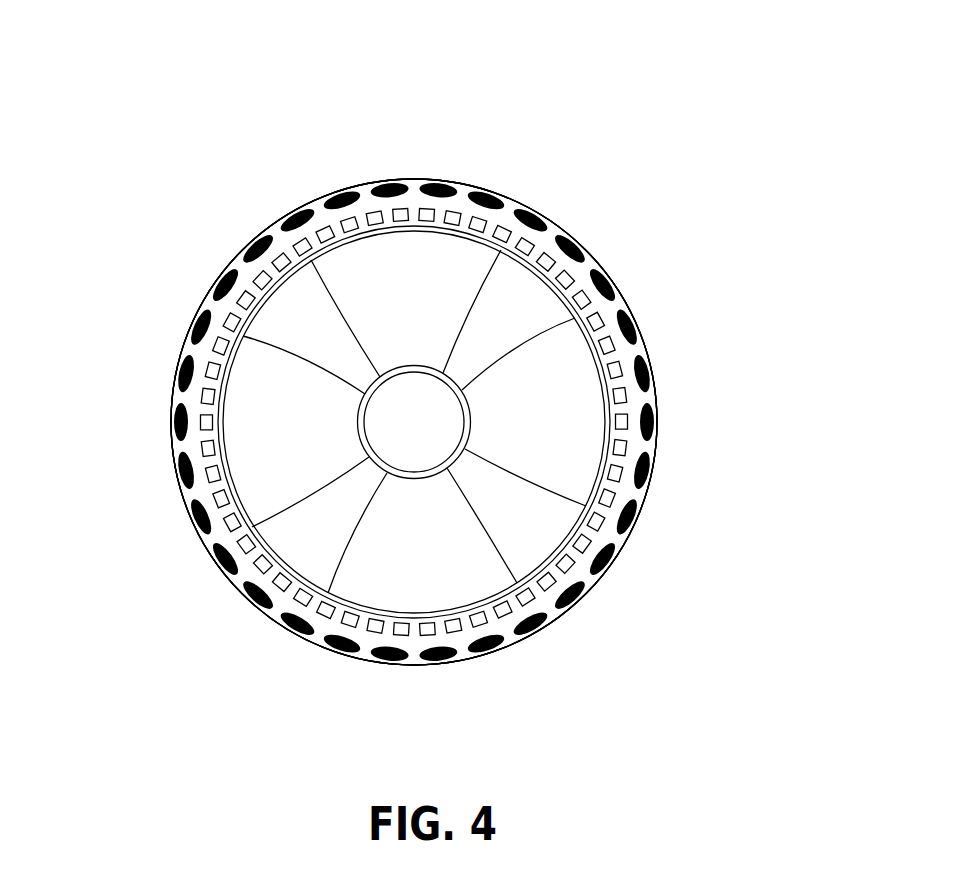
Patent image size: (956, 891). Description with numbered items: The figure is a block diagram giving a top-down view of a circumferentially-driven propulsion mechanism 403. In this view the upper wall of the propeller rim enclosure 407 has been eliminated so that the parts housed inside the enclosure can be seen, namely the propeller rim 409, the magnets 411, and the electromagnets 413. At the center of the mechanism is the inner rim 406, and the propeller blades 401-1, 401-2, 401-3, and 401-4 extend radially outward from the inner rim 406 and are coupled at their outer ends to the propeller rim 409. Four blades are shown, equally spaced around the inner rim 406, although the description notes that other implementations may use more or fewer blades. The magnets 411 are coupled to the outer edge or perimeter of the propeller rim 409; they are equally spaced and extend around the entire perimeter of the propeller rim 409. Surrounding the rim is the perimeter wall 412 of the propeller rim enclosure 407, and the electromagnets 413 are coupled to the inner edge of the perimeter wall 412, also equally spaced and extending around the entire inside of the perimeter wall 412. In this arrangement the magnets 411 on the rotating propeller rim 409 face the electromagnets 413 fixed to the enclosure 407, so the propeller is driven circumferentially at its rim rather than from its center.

The propulsion mechanism 403 is at (197, 70).
The propeller blade 401-1 is at (535, 292).
The propeller blade 401-2 is at (548, 547).
The propeller blade 401-3 is at (300, 552).
The propeller blade 401-4 is at (290, 292).
The inner rim 406 is at (472, 417).
The propeller rim enclosure 407 is at (688, 382).
The propeller rim 409 is at (462, 227).
The magnets 411 is at (633, 325).
The perimeter wall 412 is at (653, 397).
The electromagnets 413 is at (650, 472).